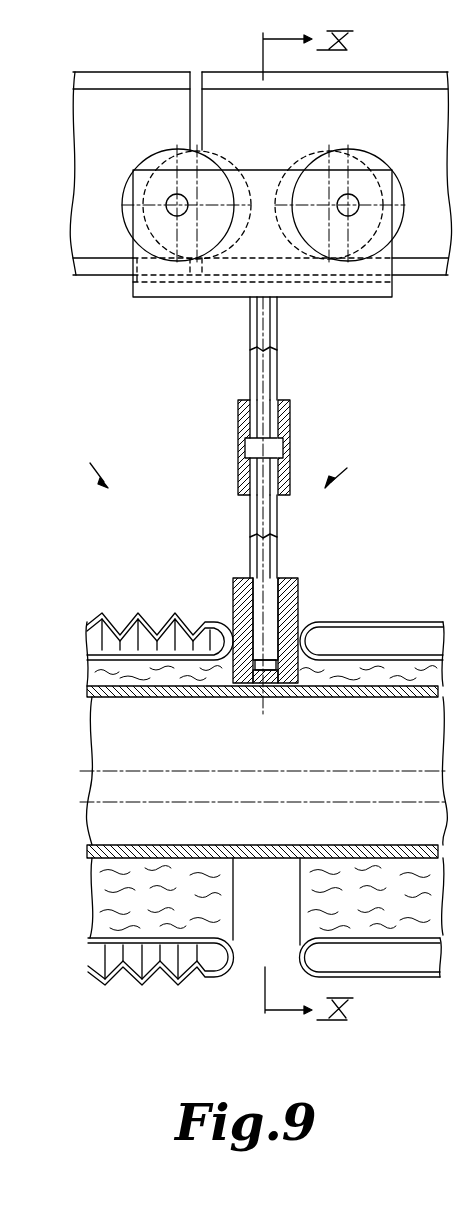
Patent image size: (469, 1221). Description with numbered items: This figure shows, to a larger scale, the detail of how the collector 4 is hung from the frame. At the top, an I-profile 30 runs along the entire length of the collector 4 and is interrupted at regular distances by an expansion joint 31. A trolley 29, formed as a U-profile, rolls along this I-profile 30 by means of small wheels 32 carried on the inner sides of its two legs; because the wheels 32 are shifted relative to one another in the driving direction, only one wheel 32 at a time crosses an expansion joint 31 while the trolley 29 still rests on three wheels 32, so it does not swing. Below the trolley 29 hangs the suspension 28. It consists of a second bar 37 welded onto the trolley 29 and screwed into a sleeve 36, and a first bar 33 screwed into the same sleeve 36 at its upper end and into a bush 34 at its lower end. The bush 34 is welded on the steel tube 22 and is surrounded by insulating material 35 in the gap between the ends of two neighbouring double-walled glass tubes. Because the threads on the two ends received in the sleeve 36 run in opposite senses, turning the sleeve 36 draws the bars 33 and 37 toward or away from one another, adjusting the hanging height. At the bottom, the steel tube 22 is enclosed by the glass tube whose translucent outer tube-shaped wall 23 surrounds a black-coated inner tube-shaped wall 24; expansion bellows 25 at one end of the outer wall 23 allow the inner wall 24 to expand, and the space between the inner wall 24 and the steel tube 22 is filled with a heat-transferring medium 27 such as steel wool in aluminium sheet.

The collector 4 is at (84, 463).
The steel tube 22 is at (112, 697).
The outer tube-shaped wall 23 is at (400, 622).
The inner tube-shaped wall 24 is at (412, 978).
The expansion bellows 25 is at (160, 980).
The heat-transferring medium 27 is at (115, 912).
The suspension 28 is at (354, 461).
The trolley 29 is at (177, 288).
The I-profile 30 is at (140, 78).
The expansion joint 31 is at (196, 72).
The wheels 32 is at (135, 272).
The first bar 33 is at (260, 548).
The bush 34 is at (233, 608).
The insulating material 35 is at (298, 602).
The sleeve 36 is at (238, 448).
The second bar 37 is at (270, 367).